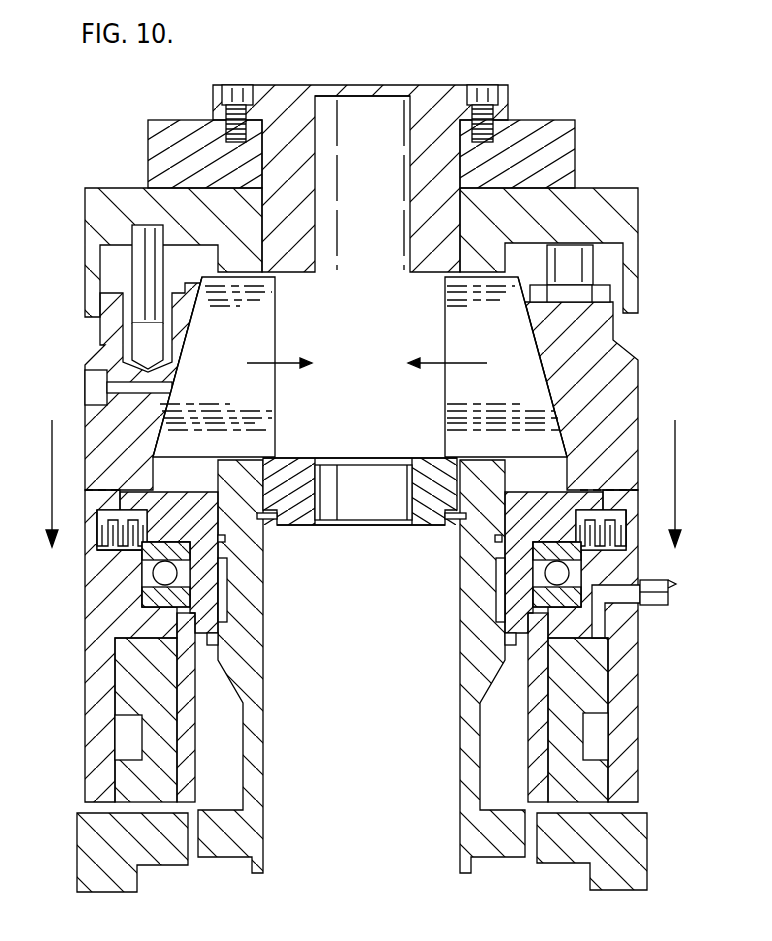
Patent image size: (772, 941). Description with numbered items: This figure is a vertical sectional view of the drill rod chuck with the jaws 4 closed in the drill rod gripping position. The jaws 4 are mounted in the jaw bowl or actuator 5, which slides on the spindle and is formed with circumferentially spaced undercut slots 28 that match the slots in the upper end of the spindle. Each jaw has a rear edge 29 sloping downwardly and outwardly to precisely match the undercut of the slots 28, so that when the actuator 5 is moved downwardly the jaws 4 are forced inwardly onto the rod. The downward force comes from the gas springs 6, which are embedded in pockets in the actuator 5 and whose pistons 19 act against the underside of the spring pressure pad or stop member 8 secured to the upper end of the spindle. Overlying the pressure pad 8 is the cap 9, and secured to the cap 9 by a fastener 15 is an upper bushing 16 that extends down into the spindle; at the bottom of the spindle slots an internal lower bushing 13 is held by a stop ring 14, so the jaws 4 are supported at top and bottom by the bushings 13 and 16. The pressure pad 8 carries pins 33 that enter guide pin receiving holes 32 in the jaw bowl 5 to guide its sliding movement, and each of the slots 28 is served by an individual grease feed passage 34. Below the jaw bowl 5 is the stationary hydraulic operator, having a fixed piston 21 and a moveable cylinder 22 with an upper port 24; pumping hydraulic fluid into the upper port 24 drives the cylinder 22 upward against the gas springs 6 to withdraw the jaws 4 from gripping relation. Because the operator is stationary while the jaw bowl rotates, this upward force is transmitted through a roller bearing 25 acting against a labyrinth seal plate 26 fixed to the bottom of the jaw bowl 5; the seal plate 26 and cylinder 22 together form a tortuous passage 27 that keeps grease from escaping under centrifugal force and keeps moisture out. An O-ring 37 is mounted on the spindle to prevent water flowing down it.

The jaws 4 is at (233, 401).
The jaw bowl or actuator 5 is at (625, 380).
The gas springs 6 is at (620, 296).
The spring pressure pad or stop member 8 is at (608, 190).
The cap 9 is at (566, 143).
The internal lower bushing 13 is at (341, 456).
The stop ring 14 is at (270, 522).
The fastener 15 is at (487, 100).
The upper bushing 16 is at (315, 124).
The pistons 19 is at (596, 268).
The fixed piston 21 is at (597, 673).
The moveable cylinder 22 is at (637, 705).
The upper port 24 is at (672, 594).
The roller bearing 25 is at (147, 585).
The labyrinth seal plate 26 is at (98, 543).
The tortuous passage 27 is at (105, 588).
The undercut slots 28 is at (198, 488).
The rear edge 29 is at (193, 320).
The guide pin receiving holes 32 is at (135, 343).
The pins 33 is at (145, 268).
The grease feed passages 34 is at (85, 383).
The O-ring 37 is at (496, 541).